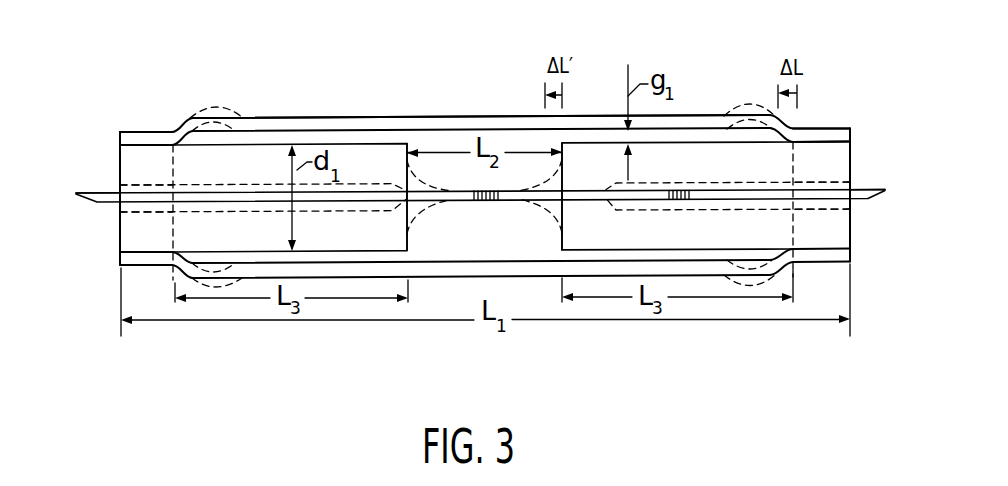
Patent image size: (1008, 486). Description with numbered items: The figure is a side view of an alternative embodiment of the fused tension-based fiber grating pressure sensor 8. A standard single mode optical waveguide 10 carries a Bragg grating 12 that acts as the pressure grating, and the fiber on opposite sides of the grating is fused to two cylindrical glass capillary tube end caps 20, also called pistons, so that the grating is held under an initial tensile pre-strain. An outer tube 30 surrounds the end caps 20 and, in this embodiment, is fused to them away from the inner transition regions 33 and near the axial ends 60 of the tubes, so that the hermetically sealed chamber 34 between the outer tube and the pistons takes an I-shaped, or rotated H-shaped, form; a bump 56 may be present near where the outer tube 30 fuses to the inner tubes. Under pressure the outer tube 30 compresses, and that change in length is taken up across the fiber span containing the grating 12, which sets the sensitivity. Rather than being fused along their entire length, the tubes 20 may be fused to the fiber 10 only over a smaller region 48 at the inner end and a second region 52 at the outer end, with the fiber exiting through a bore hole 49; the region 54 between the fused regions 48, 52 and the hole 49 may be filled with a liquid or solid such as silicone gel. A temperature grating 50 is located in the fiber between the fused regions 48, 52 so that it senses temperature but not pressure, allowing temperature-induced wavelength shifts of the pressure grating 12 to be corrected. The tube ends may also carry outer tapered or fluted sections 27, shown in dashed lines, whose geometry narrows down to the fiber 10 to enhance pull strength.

The fused tension-based fiber grating pressure sensor 8 is at (218, 80).
The optical waveguide 10 is at (117, 183).
The Bragg grating 12 is at (473, 191).
The glass capillary tube end cap 20 is at (221, 176).
The outer tapered section 27 is at (114, 214).
The outer tube 30 is at (677, 121).
The inner transition region 33 is at (407, 146).
The chamber 34 is at (484, 202).
The fused region 48 is at (416, 213).
The bore hole 49 is at (212, 216).
The temperature grating 50 is at (683, 201).
The fused region 52 is at (132, 205).
The region 54 is at (314, 214).
The bump 56 is at (760, 102).
The axial end 60 is at (150, 152).